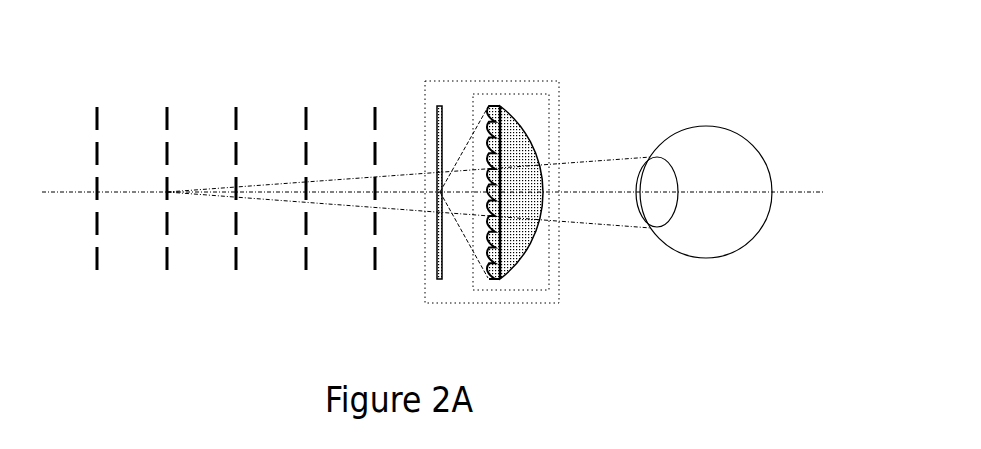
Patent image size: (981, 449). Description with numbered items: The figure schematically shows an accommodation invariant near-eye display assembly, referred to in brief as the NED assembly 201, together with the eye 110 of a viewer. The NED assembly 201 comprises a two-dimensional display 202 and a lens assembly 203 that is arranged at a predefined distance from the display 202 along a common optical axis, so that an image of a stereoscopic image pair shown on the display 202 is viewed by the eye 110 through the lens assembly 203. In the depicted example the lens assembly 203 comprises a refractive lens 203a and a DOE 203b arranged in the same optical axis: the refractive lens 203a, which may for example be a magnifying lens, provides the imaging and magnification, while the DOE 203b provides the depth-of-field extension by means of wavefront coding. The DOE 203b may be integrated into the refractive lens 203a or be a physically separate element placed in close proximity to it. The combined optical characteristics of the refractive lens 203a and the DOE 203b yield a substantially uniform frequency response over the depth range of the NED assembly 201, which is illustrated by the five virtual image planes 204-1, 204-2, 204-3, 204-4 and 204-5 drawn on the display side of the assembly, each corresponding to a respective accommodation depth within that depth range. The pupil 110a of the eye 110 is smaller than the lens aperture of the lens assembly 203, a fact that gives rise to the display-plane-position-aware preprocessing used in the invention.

The eye 110 is at (696, 161).
The pupil 110a is at (655, 158).
The accommodation invariant NED assembly 201 is at (496, 193).
The 2D display 202 is at (447, 272).
The lens assembly 203 is at (530, 186).
The refractive lens 203a is at (522, 110).
The DOE 203b is at (485, 108).
The image plane 204-1 is at (373, 117).
The image plane 204-2 is at (297, 110).
The image plane 204-3 is at (235, 117).
The image plane 204-4 is at (153, 107).
The image plane 204-5 is at (90, 110).